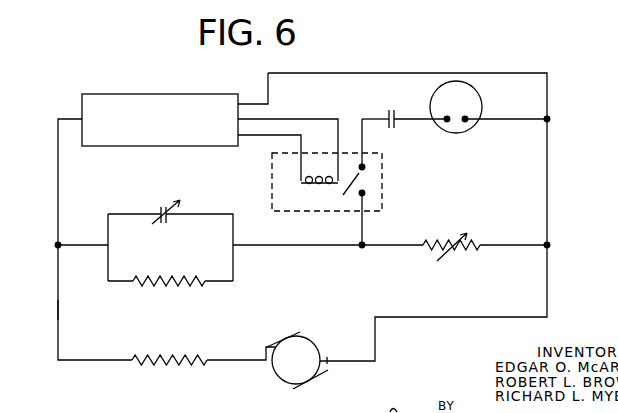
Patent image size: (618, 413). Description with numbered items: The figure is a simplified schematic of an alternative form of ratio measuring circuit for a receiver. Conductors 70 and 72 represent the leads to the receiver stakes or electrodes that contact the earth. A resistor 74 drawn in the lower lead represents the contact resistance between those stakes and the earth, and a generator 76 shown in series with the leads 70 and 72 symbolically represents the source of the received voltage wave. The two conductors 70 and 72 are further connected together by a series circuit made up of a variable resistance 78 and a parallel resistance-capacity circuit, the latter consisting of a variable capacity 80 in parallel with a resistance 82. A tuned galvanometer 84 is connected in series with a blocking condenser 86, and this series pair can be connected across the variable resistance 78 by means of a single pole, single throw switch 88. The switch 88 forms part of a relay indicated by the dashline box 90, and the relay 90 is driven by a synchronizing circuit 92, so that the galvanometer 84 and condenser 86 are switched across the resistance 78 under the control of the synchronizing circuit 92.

The conductor 70 is at (58, 307).
The conductor 72 is at (548, 278).
The resistor 74 is at (159, 355).
The generator 76 is at (308, 338).
The variable resistance 78 is at (457, 255).
The variable capacity 80 is at (159, 212).
The resistance 82 is at (172, 275).
The tuned galvanometer 84 is at (461, 133).
The blocking condenser 86 is at (396, 110).
The single pole, single throw switch 88 is at (357, 176).
The relay 90 is at (383, 173).
The synchronizing circuit 92 is at (165, 93).